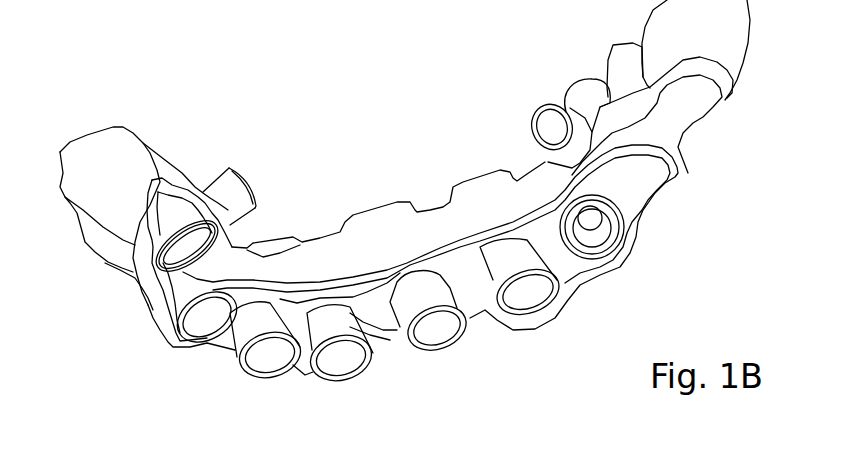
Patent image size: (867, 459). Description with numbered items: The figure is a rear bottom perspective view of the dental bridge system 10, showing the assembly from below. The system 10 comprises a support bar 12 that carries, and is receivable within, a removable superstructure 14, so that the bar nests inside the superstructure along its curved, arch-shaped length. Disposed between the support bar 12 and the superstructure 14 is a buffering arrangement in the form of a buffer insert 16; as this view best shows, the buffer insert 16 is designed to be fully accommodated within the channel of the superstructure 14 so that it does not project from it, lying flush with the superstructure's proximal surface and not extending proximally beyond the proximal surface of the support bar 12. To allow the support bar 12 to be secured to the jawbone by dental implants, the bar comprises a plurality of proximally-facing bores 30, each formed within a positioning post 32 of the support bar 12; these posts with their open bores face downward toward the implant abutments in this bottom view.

The dental bridge system 10 is at (391, 112).
The support bar 12 is at (615, 188).
The removable superstructure 14 is at (682, 174).
The buffer insert 16 is at (650, 187).
The proximally-facing bore 30 is at (267, 357).
The positioning post 32 is at (243, 338).